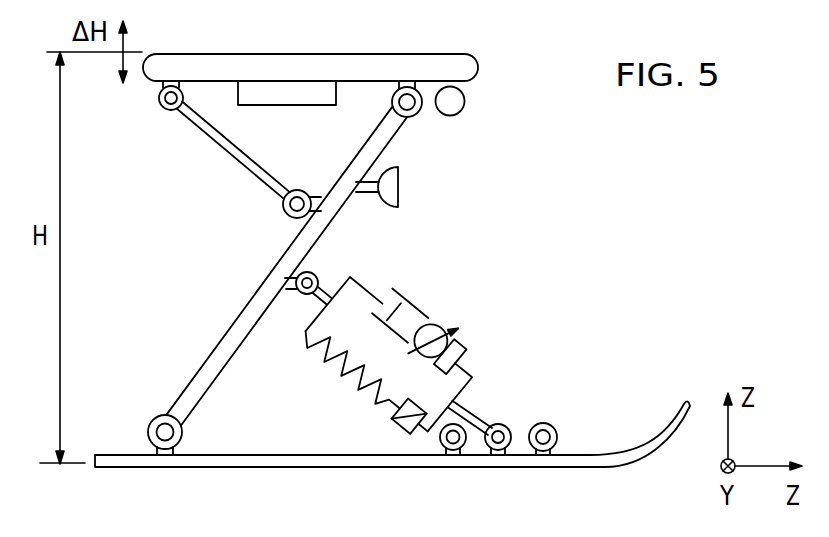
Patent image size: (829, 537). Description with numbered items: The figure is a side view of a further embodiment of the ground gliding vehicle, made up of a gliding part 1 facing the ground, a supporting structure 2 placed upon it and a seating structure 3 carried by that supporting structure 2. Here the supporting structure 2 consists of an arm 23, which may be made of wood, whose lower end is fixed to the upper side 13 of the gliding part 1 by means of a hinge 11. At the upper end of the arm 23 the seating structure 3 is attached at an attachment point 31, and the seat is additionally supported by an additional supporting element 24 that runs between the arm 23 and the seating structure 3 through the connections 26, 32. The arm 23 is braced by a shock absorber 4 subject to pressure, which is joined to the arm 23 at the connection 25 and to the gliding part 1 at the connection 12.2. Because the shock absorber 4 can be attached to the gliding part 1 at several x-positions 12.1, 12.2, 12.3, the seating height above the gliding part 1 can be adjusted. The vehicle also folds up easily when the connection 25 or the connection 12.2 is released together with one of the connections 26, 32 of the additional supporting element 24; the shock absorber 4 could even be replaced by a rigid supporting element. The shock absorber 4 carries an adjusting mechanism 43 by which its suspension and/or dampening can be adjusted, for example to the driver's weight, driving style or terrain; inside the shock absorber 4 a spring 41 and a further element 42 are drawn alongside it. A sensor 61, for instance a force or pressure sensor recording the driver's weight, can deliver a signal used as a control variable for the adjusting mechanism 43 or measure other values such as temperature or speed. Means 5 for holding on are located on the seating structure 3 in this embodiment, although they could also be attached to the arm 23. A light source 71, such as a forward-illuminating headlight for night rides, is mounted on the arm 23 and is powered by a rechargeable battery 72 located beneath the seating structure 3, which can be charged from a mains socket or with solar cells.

The gliding part 1 is at (392, 451).
The supporting structure 2 is at (255, 278).
The seating structure 3 is at (315, 68).
The shock absorber 4 is at (409, 338).
The means for holding on 5 is at (455, 104).
The hinge 11 is at (154, 420).
The attachment position 12.1 is at (447, 454).
The connection 12.2 is at (498, 424).
The attachment position 12.3 is at (548, 424).
The upper side 13 is at (251, 452).
The arm 23 is at (248, 318).
The additional supporting element 24 is at (231, 158).
The connection 25 is at (313, 274).
The connection 26 is at (298, 189).
The attachment point 31 is at (423, 113).
The connection 32 is at (160, 103).
The spring 41 is at (385, 383).
The check valve 42 is at (459, 350).
The adjusting mechanism 43 is at (433, 332).
The sensor 61 is at (396, 418).
The light source 71 is at (398, 187).
The battery 72 is at (268, 92).